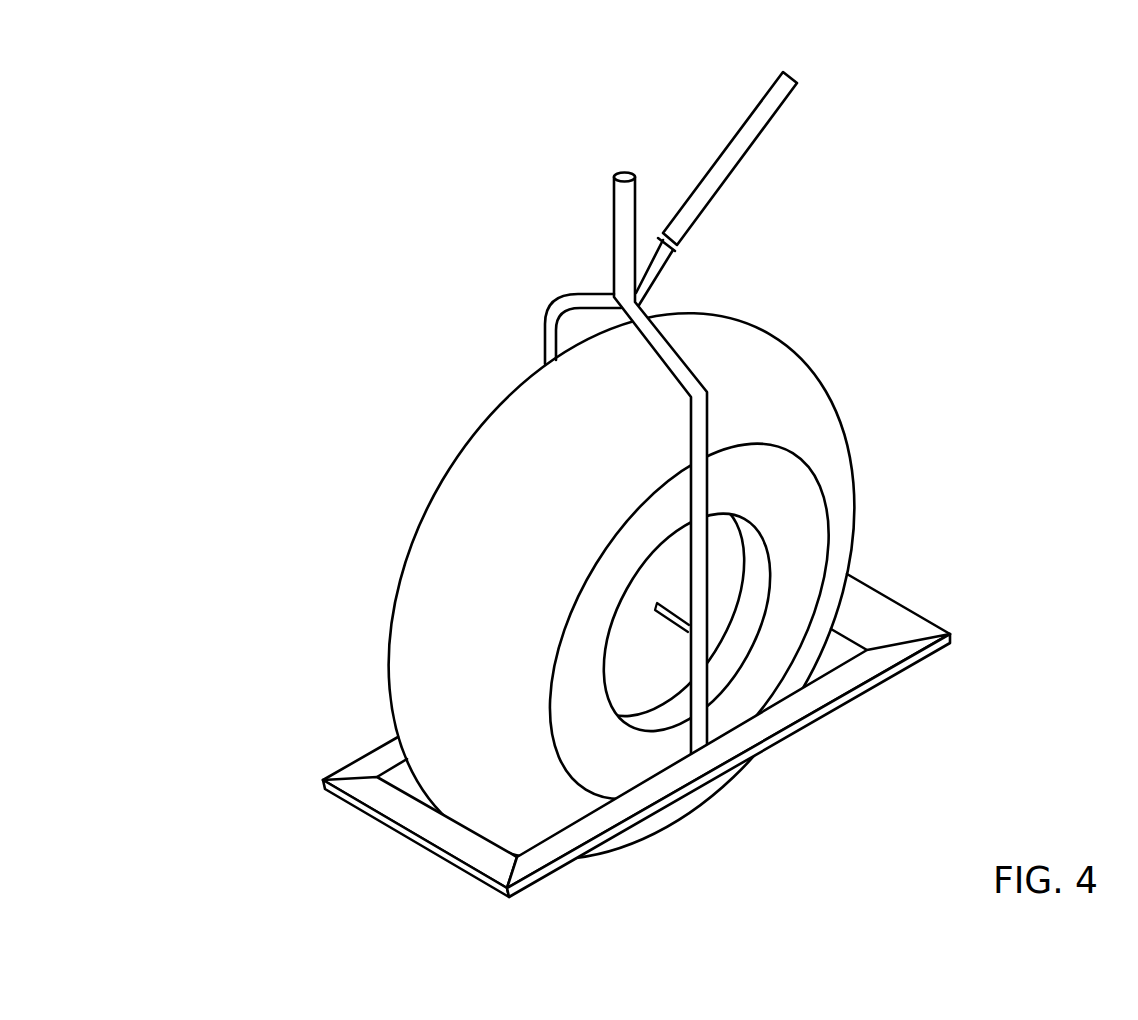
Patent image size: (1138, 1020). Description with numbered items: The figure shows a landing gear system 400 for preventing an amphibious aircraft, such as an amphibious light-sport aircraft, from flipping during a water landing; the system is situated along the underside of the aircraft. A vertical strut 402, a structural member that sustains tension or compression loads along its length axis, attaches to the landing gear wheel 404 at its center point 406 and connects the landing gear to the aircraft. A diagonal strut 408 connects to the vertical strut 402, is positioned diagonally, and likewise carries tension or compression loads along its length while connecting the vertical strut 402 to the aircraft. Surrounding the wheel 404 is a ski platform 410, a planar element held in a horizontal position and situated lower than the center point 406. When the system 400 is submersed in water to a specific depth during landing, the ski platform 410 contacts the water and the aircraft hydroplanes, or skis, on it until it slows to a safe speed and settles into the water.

The landing gear system 400 is at (1051, 138).
The vertical strut 402 is at (602, 250).
The landing gear wheel 404 is at (753, 325).
The center point 406 is at (643, 600).
The diagonal strut 408 is at (683, 193).
The ski platform 410 is at (827, 710).